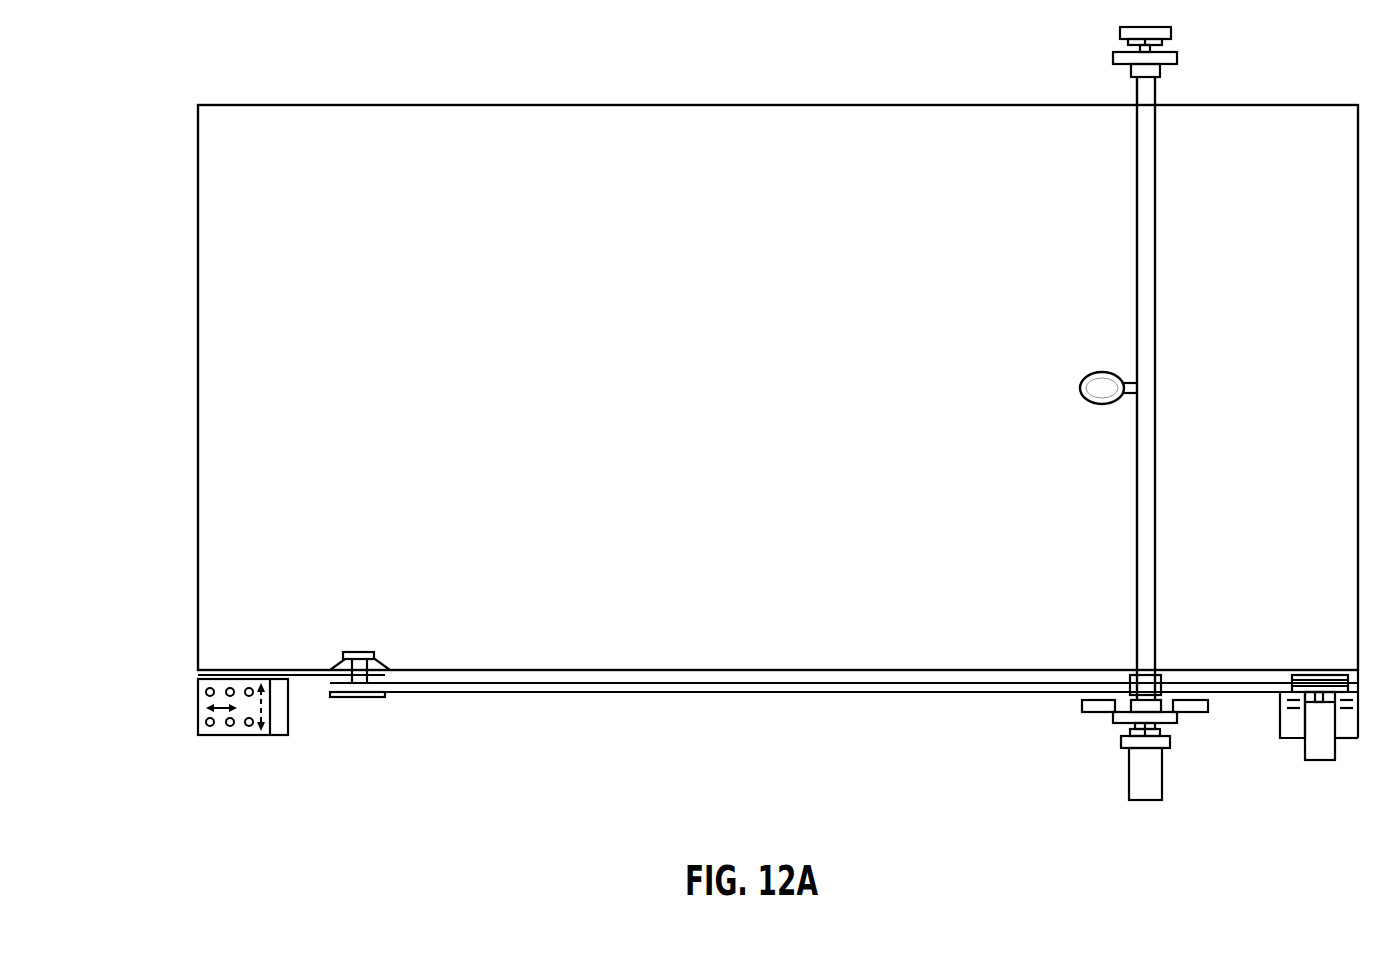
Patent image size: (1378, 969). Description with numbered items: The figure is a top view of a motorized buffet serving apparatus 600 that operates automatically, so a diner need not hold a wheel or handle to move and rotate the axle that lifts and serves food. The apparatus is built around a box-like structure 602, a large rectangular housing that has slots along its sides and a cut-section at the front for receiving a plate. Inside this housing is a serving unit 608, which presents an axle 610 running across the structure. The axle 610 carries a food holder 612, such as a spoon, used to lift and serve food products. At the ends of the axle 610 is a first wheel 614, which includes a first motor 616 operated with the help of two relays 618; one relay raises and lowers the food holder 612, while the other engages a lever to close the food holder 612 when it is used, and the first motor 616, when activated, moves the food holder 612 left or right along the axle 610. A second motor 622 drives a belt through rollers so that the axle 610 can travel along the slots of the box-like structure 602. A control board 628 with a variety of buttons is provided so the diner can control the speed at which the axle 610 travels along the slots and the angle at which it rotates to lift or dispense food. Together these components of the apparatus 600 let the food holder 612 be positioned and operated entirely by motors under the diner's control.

The buffet serving apparatus 600 is at (194, 57).
The box-like structure 602 is at (730, 103).
The serving unit 608 is at (1178, 215).
The axle 610 is at (1136, 512).
The food holder 612 is at (1080, 388).
The first wheel 614 is at (1112, 55).
The first motor 616 is at (1143, 818).
The relays 618 is at (1097, 715).
The second motor 622 is at (1311, 776).
The control board 628 is at (230, 727).